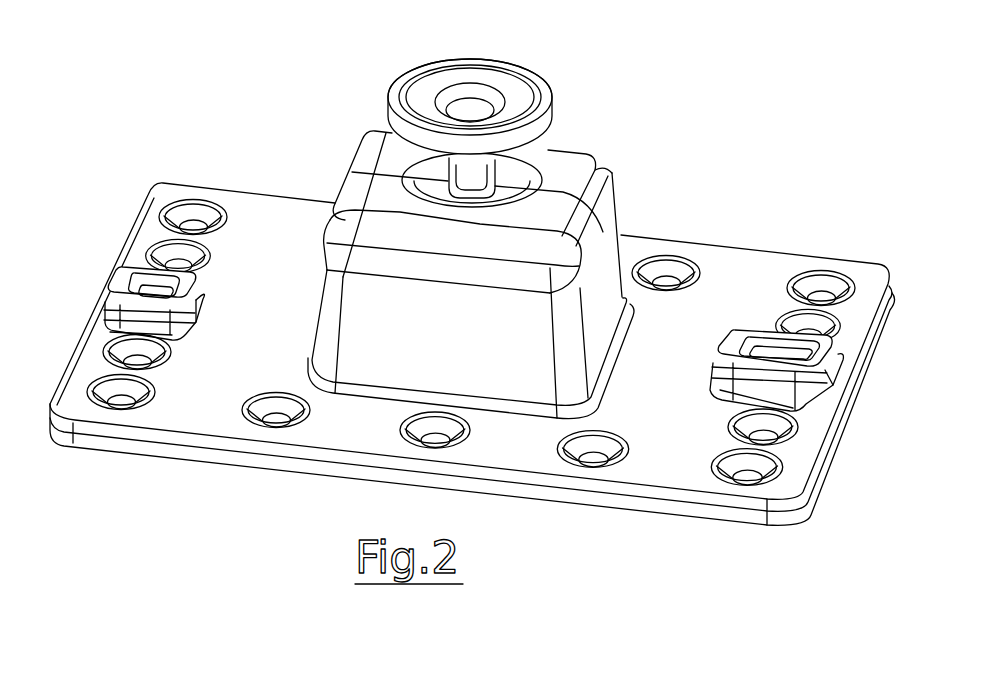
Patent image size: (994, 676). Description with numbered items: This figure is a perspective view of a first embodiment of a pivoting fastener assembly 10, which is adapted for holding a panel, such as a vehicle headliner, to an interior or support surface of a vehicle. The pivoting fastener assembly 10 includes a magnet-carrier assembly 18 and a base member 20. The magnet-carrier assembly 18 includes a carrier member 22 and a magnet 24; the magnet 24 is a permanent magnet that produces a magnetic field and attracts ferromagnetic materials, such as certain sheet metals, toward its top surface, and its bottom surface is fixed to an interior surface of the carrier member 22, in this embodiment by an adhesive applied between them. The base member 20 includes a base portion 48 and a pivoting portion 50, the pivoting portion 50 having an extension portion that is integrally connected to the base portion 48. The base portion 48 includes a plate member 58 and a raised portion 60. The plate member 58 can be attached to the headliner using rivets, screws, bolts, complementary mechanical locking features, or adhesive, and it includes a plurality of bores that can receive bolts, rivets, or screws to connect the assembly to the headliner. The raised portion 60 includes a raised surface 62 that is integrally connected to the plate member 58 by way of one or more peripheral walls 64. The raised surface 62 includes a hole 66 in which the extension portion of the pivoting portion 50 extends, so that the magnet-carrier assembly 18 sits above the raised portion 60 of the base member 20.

The pivoting fastener assembly 10 is at (728, 41).
The magnet-carrier assembly 18 is at (523, 62).
The base member 20 is at (700, 104).
The carrier member 22 is at (547, 83).
The magnet 24 is at (470, 68).
The base portion 48 is at (636, 166).
The pivoting portion 50 is at (349, 135).
The plate member 58 is at (797, 255).
The raised portion 60 is at (591, 146).
The raised surface 62 is at (556, 161).
The peripheral walls 64 is at (626, 203).
The hole 66 is at (472, 180).